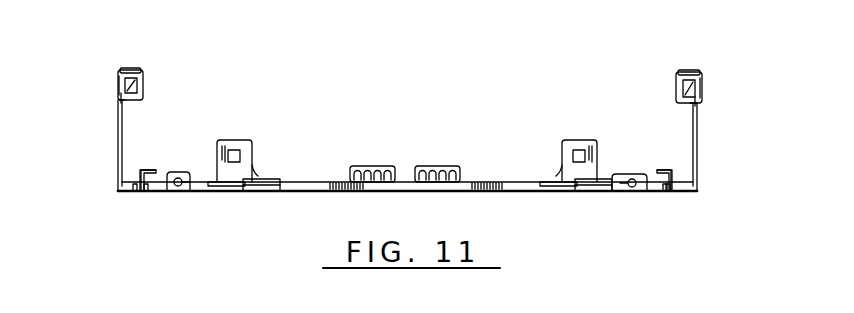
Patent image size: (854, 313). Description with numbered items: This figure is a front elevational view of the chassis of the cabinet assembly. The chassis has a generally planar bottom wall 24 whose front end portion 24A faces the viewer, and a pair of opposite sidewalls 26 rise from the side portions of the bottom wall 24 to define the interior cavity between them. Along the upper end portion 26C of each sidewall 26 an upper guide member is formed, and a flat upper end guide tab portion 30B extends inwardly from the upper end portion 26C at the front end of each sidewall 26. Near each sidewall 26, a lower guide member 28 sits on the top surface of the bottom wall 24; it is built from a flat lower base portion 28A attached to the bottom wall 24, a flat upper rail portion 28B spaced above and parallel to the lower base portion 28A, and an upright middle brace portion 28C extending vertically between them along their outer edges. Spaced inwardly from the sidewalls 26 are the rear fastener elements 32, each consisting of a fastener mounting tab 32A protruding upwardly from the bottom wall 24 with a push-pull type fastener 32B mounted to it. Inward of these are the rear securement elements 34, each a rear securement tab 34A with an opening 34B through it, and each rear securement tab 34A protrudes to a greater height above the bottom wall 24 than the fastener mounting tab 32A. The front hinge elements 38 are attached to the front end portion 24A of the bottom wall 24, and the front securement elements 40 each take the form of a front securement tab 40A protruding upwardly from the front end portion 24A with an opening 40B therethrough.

The bottom wall 24 is at (439, 192).
The front end portion 24A is at (402, 185).
The sidewall 26 is at (113, 172).
The upper end portion 26C is at (120, 84).
The lower guide member 28 is at (125, 160).
The lower base portion 28A is at (144, 184).
The upper rail portion 28B is at (150, 170).
The upright middle brace portion 28C is at (136, 181).
The upper end guide tab portion 30B is at (127, 72).
The rear fastener element 32 is at (173, 188).
The fastener mounting tab 32A is at (182, 187).
The push-pull type fastener 32B is at (190, 186).
The rear securement element 34 is at (247, 140).
The rear securement tab 34A is at (253, 153).
The opening 34B is at (233, 152).
The front hinge element 38 is at (270, 191).
The front securement element 40 is at (140, 83).
The front securement tab 40A is at (127, 102).
The opening 40B is at (137, 70).